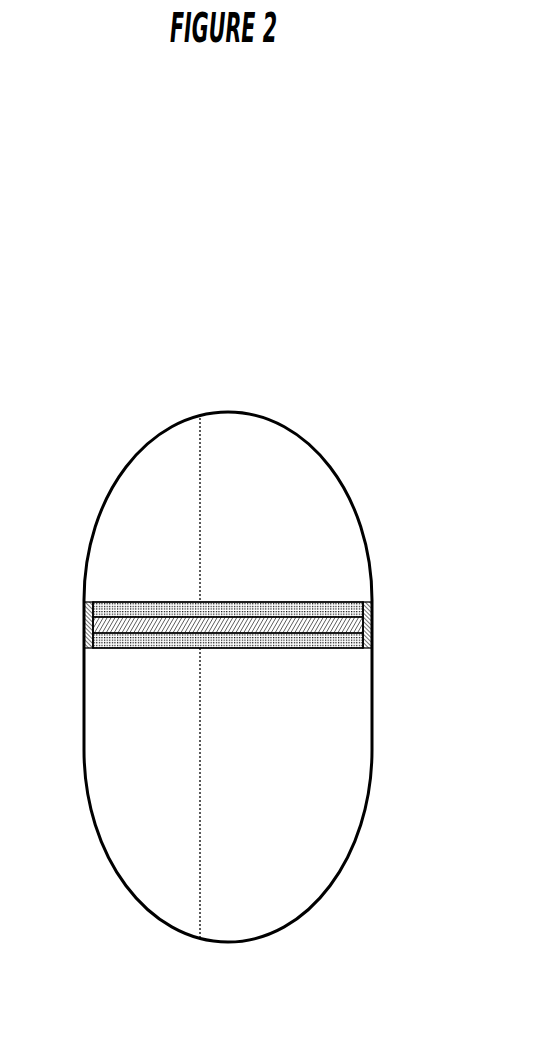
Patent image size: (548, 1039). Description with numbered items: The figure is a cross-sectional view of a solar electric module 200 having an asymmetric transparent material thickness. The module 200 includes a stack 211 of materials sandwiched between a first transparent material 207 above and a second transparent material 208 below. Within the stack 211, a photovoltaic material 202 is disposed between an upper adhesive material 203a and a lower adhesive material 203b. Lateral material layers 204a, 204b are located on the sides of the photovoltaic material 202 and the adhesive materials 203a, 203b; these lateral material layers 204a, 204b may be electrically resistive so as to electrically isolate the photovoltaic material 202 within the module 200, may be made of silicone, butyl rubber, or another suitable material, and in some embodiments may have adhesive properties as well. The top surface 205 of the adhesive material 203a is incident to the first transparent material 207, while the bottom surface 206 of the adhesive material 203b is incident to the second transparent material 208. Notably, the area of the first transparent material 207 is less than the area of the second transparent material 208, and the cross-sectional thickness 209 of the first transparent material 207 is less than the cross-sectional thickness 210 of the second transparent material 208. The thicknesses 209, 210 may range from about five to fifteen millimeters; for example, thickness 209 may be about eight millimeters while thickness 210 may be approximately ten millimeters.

The solar electric module 200 is at (114, 320).
The photovoltaic material 202 is at (272, 624).
The adhesive material 203a is at (233, 607).
The adhesive material 203b is at (228, 645).
The lateral material layer 204a is at (84, 621).
The lateral material layer 204b is at (376, 600).
The top surface 205 is at (331, 596).
The bottom surface 206 is at (315, 654).
The first transparent material 207 is at (255, 538).
The second transparent material 208 is at (255, 750).
The cross-sectional thickness 209 is at (200, 483).
The cross-sectional thickness 210 is at (200, 765).
The stack 211 is at (242, 634).